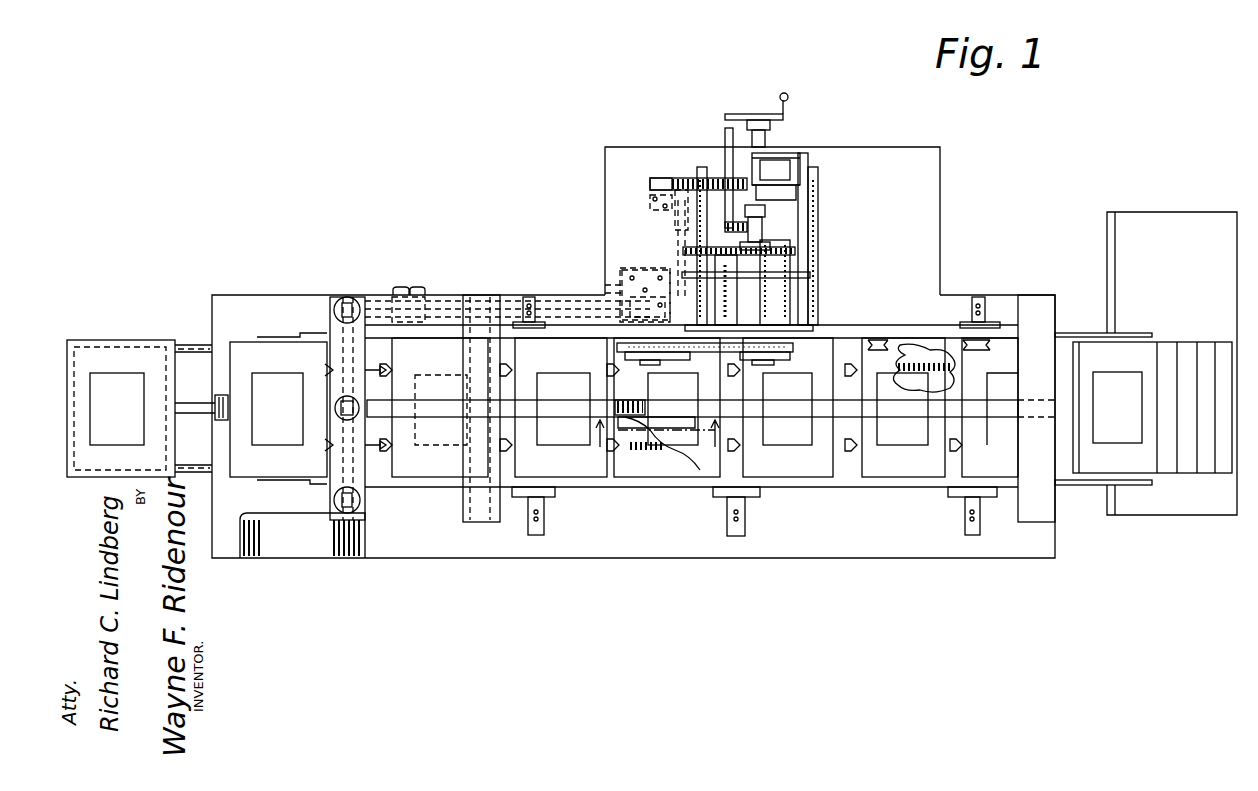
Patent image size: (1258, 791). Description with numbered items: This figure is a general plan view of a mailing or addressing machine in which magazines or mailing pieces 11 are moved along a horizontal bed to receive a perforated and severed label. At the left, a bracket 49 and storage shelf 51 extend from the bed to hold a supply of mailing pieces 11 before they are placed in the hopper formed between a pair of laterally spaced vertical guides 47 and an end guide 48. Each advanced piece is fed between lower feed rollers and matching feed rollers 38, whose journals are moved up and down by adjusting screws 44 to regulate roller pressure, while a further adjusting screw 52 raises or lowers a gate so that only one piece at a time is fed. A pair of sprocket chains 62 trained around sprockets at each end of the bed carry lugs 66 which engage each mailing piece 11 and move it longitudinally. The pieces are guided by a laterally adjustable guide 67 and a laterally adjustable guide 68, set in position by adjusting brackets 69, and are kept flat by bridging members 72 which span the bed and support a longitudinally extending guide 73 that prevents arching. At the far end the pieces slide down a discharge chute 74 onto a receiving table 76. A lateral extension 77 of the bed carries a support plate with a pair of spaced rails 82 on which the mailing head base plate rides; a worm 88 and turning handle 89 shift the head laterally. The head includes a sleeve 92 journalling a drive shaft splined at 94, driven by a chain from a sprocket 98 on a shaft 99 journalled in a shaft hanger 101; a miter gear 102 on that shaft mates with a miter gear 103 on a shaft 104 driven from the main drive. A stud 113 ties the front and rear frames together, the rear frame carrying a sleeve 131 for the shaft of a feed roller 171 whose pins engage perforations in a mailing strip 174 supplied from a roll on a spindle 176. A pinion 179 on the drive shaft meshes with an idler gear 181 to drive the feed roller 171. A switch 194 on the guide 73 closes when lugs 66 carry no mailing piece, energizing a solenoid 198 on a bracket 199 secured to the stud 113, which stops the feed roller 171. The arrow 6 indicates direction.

The direction arrow 6 is at (660, 441).
The mailing piece 11 is at (258, 345).
The feed rollers 38 is at (372, 418).
The adjusting screws 44 is at (357, 300).
The vertical guides 47 is at (298, 337).
The end guide 48 is at (228, 397).
The bracket 49 is at (178, 345).
The storage shelf 51 is at (160, 350).
The adjusting screw 52 is at (334, 405).
The sprocket chains 62 is at (645, 448).
The lugs 66 is at (512, 370).
The laterally adjustable guide 67 is at (435, 325).
The laterally adjustable guide 68 is at (655, 488).
The adjusting brackets 69 is at (532, 300).
The bridging members 72 is at (478, 513).
The longitudinally extending guide 73 is at (535, 405).
The discharge chute 74 is at (1100, 485).
The receiving table 76 is at (1195, 292).
The lateral extension 77 is at (942, 210).
The spaced rails 82 is at (818, 193).
The worm 88 is at (766, 140).
The turning handle 89 is at (788, 100).
The sleeve 92 is at (718, 303).
The spline 94 is at (725, 128).
The sprocket 98 is at (662, 178).
The shaft 99 is at (678, 216).
The shaft hanger 101 is at (650, 200).
The miter gear 102 is at (672, 285).
The miter gear 103 is at (622, 300).
The shaft 104 is at (470, 312).
The stud 113 is at (812, 264).
The sleeve 131 is at (780, 295).
The feed roller 171 is at (780, 360).
The mailing strip 174 is at (875, 340).
The spindle 176 is at (638, 360).
The pinion 179 is at (735, 222).
The idler gear 181 is at (752, 218).
The switch 194 is at (632, 400).
The solenoid 198 is at (790, 163).
The bracket 199 is at (798, 152).